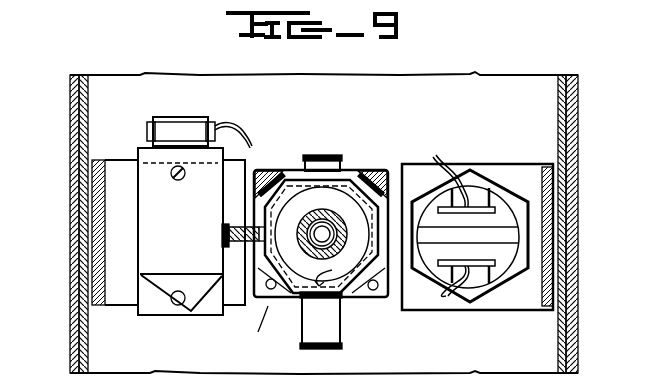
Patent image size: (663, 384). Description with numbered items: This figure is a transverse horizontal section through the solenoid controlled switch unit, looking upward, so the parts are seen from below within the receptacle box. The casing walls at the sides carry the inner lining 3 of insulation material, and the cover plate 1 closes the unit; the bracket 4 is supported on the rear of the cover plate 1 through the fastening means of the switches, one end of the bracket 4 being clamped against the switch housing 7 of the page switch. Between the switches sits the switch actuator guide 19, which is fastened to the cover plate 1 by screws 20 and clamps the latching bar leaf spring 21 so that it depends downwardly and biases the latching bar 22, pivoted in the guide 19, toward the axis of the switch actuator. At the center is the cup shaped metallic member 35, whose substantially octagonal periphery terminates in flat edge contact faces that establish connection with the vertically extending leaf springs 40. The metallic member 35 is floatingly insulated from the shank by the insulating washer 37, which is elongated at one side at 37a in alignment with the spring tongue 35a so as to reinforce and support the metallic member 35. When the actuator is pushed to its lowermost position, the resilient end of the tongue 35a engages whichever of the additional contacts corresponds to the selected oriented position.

The cover plate 1 is at (78, 162).
The inner lining 3 is at (100, 338).
The bracket 4 is at (100, 232).
The switch housing 7 is at (142, 132).
The switch actuator guide 19 is at (355, 170).
The screws 20 is at (271, 291).
The latching bar leaf spring 21 is at (230, 236).
The latching bar 22 is at (230, 246).
The metallic member 35 is at (284, 170).
The spring tongue 35a is at (336, 349).
The washer 37 is at (378, 292).
The elongated side of washer 37a is at (290, 298).
The leaf springs 40 is at (322, 156).